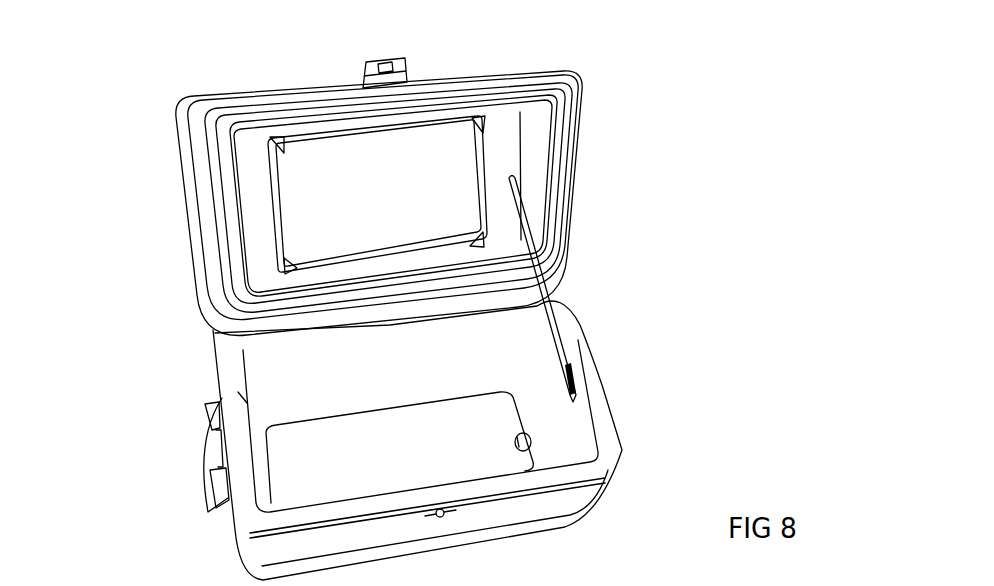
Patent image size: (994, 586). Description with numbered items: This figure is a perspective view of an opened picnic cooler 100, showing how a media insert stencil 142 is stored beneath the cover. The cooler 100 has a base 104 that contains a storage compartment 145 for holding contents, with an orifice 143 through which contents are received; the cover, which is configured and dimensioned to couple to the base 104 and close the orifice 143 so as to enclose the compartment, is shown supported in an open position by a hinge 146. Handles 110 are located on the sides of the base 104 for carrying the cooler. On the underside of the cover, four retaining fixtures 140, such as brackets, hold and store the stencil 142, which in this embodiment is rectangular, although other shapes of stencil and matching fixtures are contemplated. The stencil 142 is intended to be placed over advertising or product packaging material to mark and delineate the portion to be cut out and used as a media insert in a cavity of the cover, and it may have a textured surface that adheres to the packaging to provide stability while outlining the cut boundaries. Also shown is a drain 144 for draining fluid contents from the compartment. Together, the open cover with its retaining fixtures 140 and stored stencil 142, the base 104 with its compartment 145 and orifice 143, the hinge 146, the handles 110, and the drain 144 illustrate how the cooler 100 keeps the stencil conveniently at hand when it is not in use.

The picnic cooler 100 is at (710, 100).
The base 104 is at (603, 352).
The handle 110 is at (208, 443).
The retaining fixture 140 is at (282, 137).
The media insert stencil 142 is at (391, 121).
The orifice 143 is at (243, 399).
The drain 144 is at (532, 437).
The storage compartment 145 is at (548, 310).
The hinge 146 is at (503, 357).